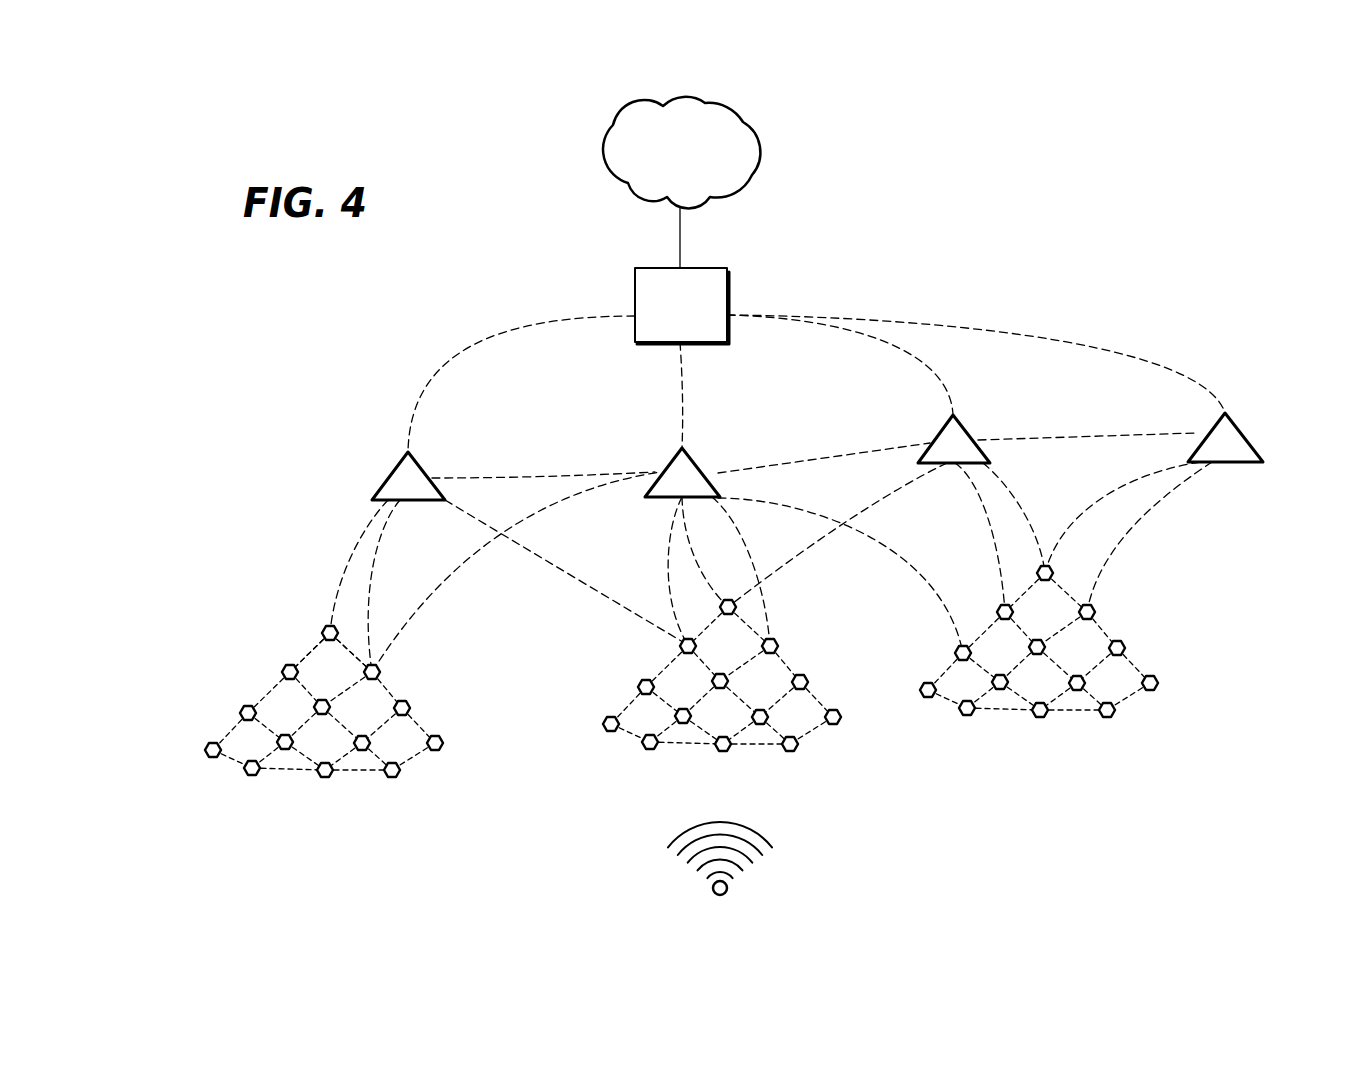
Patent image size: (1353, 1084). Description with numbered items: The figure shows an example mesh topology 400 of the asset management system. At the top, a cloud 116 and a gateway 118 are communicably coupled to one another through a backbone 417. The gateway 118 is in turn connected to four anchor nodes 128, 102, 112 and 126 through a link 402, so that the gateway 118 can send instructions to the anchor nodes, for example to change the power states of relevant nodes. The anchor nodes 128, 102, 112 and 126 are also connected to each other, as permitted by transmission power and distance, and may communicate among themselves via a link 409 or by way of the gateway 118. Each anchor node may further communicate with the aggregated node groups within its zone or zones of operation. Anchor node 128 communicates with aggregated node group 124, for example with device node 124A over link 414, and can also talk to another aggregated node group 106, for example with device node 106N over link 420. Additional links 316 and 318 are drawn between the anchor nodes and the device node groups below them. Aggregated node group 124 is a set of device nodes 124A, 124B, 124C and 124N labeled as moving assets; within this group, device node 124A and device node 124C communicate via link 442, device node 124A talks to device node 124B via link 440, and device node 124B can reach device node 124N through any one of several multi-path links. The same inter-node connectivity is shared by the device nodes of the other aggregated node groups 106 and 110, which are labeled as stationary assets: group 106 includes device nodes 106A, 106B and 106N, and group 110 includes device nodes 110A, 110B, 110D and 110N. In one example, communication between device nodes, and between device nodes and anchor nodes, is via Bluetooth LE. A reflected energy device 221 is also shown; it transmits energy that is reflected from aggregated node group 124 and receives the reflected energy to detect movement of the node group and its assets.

The mesh topology 400 is at (978, 198).
The cloud 116 is at (760, 152).
The backbone 417 is at (681, 242).
The gateway 118 is at (728, 290).
The link 402 is at (555, 318).
The link 409 is at (523, 477).
The anchor node 128 is at (396, 468).
The anchor node 102 is at (674, 458).
The anchor node 112 is at (963, 428).
The anchor node 126 is at (1242, 435).
The link 414 is at (362, 520).
The wireless link 316 is at (370, 556).
The wireless link 318 is at (462, 565).
The link 420 is at (572, 562).
The aggregated node group 124 is at (305, 701).
The device node 124A is at (324, 628).
The device node 124B is at (382, 672).
The device node 124C is at (282, 672).
The device node 124N is at (400, 773).
The link 440 is at (350, 645).
The link 442 is at (315, 650).
The aggregated node group 106 is at (755, 682).
The device node 106A is at (738, 605).
The device node 106B is at (780, 645).
The device node 106N is at (678, 647).
The aggregated node group 110 is at (1064, 642).
The device node 110A is at (1055, 574).
The device node 110B is at (1097, 611).
The stationary asset 110D is at (957, 648).
The device node 110N is at (1000, 605).
The reflected energy device 221 is at (713, 890).